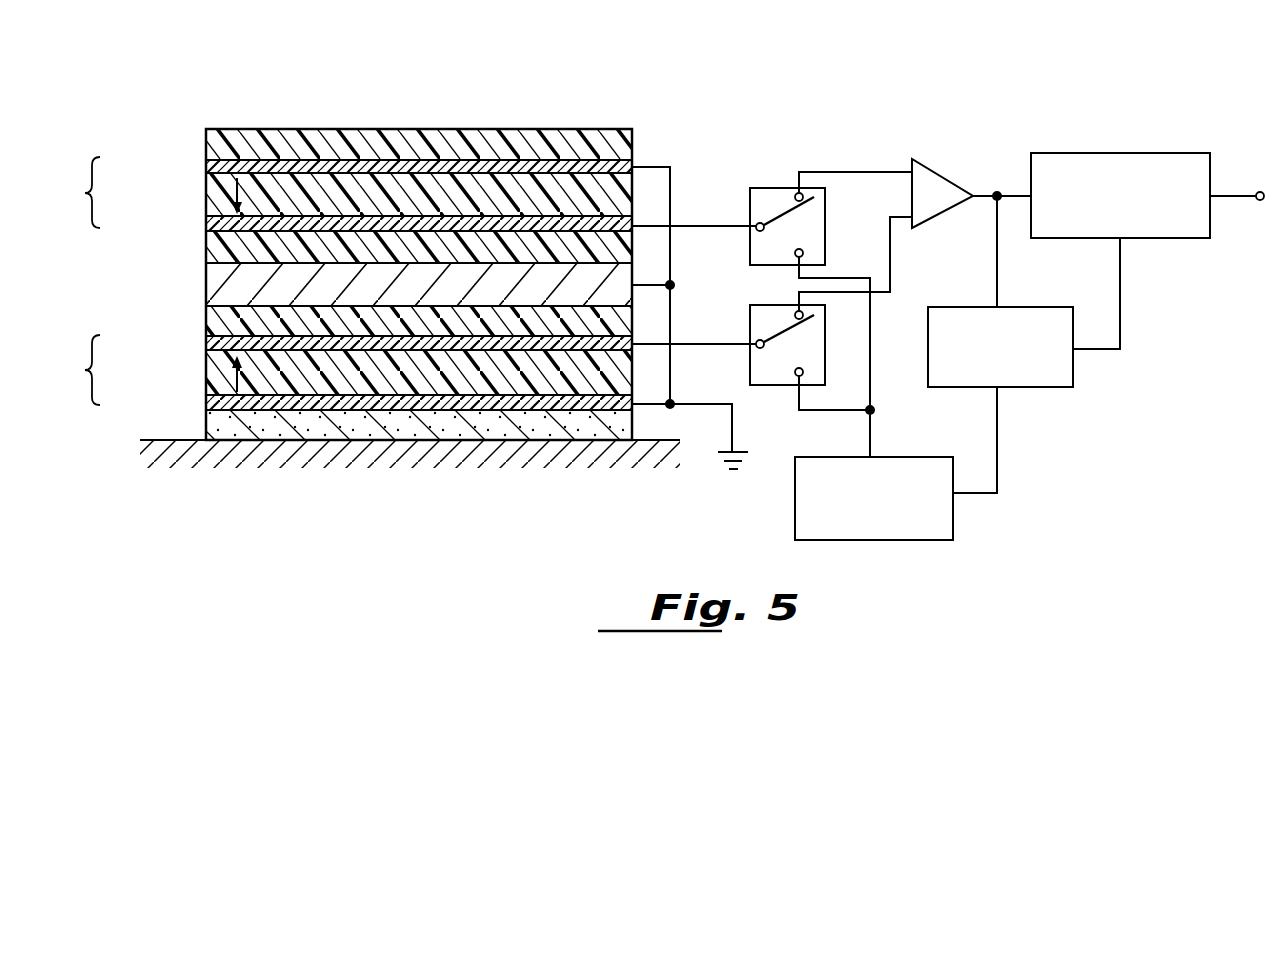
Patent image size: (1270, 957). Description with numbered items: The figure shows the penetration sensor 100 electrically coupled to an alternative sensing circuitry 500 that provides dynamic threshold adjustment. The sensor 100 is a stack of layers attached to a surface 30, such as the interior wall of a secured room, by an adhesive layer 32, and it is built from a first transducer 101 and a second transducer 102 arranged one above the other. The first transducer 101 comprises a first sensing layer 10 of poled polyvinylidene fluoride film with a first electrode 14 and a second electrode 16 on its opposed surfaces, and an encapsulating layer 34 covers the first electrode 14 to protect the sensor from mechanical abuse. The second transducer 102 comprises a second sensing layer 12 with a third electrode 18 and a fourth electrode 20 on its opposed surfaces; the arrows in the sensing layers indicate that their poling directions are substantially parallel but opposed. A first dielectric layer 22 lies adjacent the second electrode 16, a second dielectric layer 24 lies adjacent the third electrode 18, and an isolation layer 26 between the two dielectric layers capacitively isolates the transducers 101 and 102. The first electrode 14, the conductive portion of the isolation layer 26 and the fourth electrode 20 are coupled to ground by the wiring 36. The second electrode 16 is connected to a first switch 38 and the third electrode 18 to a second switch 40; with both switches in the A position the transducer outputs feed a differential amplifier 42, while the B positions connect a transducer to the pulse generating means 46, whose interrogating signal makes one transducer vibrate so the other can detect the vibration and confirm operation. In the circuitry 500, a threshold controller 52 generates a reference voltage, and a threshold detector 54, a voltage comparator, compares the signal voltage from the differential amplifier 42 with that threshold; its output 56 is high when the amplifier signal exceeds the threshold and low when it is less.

The penetration sensor 100 is at (482, 116).
The sensing circuitry 500 is at (1023, 130).
The first transducer 101 is at (75, 192).
The second transducer 102 is at (74, 370).
The encapsulating layer 34 is at (215, 133).
The first electrode 14 is at (206, 166).
The first sensing layer 10 is at (206, 198).
The second electrode 16 is at (206, 226).
The first dielectric layer 22 is at (206, 246).
The isolation layer 26 is at (206, 286).
The second dielectric layer 24 is at (206, 322).
The third electrode 18 is at (206, 344).
The second sensing layer 12 is at (206, 376).
The fourth electrode 20 is at (206, 402).
The adhesive layer 32 is at (300, 430).
The surface 30 is at (210, 476).
The wiring 36 is at (715, 436).
The first switch 38 is at (750, 200).
The second switch 40 is at (750, 372).
The differential amplifier 42 is at (933, 172).
The pulse generating means 46 is at (953, 512).
The threshold controller 52 is at (1040, 387).
The threshold detector 54 is at (1148, 153).
The output 56 is at (1258, 200).